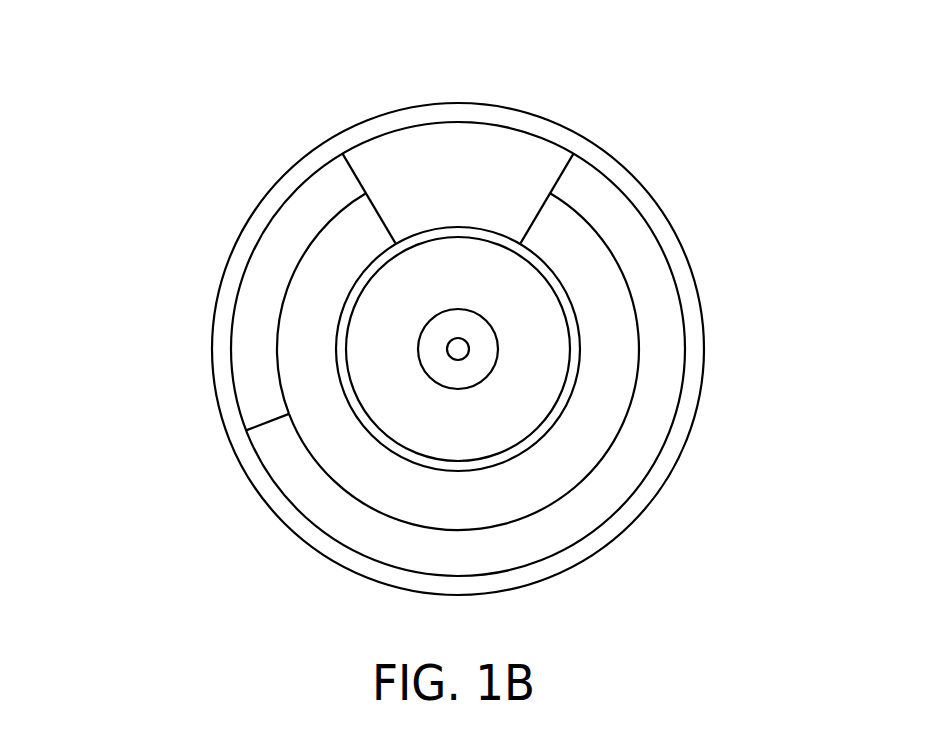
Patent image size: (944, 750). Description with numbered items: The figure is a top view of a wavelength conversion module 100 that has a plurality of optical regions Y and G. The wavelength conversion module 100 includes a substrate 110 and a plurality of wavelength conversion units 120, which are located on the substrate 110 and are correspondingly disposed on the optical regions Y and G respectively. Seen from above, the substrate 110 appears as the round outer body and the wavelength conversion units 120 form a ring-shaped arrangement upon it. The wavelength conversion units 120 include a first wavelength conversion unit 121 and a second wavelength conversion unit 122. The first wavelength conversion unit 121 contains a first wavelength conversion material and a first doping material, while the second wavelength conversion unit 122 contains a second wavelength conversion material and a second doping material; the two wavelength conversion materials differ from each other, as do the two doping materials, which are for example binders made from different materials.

The wavelength conversion module 100 is at (162, 102).
The substrate 110 is at (658, 225).
The wavelength conversion units 120 is at (126, 373).
The first wavelength conversion unit 121 is at (282, 460).
The second wavelength conversion unit 122 is at (250, 377).
The optical region G is at (258, 172).
The optical region Y is at (722, 317).